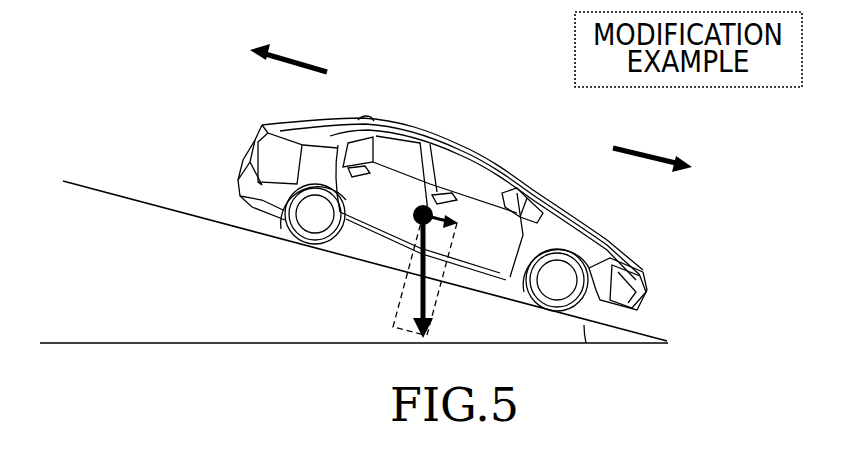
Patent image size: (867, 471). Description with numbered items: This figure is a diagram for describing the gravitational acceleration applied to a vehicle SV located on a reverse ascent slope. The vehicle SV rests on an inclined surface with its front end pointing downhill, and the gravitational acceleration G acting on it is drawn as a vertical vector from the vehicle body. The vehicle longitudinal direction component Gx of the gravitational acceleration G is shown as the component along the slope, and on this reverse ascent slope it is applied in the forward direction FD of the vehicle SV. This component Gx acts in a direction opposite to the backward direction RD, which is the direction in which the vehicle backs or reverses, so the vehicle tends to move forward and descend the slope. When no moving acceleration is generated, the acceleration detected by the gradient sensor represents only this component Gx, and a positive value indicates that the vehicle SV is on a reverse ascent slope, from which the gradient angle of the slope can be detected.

The vehicle SV is at (611, 234).
The backward direction RD is at (288, 39).
The forward direction FD is at (667, 143).
The gravitational acceleration G is at (427, 273).
The vehicle longitudinal direction component Gx is at (458, 231).